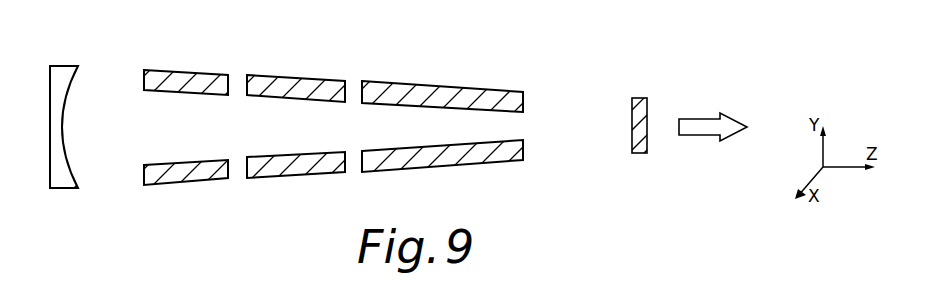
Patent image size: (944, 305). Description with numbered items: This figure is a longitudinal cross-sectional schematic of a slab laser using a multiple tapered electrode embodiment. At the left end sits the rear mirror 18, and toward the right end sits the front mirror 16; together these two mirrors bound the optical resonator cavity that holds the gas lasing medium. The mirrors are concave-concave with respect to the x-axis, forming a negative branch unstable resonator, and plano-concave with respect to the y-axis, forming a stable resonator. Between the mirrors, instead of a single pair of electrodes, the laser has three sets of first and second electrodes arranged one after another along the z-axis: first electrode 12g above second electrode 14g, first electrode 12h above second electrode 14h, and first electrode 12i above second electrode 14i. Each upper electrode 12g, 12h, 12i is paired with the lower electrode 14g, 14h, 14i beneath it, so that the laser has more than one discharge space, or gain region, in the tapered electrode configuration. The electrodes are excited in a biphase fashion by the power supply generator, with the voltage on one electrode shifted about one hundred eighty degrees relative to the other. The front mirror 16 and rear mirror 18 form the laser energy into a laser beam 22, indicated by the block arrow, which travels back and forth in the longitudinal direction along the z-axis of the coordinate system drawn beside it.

The rear mirror 18 is at (50, 73).
The first electrode 12g is at (185, 70).
The first electrode 12h is at (295, 75).
The first electrode 12i is at (452, 84).
The second electrode 14g is at (173, 186).
The second electrode 14h is at (277, 178).
The second electrode 14i is at (507, 163).
The front mirror 16 is at (642, 110).
The laser beam 22 is at (698, 118).